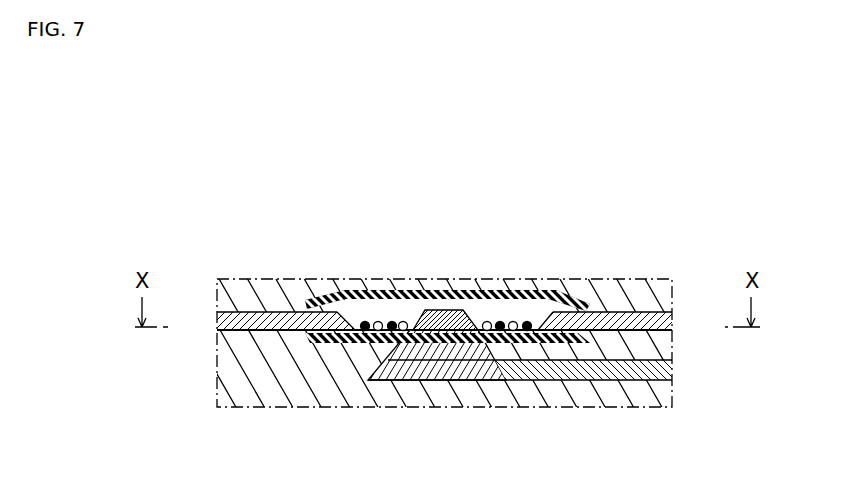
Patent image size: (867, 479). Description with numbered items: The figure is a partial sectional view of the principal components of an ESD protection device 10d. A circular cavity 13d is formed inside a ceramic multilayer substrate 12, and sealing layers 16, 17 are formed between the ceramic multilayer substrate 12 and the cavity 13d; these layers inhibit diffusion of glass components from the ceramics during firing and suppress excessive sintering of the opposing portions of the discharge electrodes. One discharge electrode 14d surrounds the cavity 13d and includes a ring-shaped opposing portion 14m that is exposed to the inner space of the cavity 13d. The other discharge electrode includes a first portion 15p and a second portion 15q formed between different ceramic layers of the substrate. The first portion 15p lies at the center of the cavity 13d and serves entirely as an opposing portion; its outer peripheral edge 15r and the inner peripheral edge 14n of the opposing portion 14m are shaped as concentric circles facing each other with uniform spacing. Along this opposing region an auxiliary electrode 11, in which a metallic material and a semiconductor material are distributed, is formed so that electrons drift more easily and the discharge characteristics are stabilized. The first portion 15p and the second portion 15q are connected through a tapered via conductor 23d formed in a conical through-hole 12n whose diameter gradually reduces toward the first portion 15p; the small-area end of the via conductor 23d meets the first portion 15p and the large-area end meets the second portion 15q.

The ESD protection device 10d is at (744, 144).
The ceramic multilayer substrate 12 is at (647, 286).
The through-hole 12n is at (488, 358).
The auxiliary electrode 11 is at (411, 325).
The cavity 13d is at (513, 313).
The discharge electrode 14d is at (228, 305).
The opposing portion 14m is at (548, 312).
The inner peripheral edge 14n is at (539, 313).
The first portion 15p is at (443, 310).
The second portion 15q is at (673, 367).
The outer peripheral edge 15r is at (397, 322).
The sealing layer 16 is at (324, 345).
The sealing layer 17 is at (487, 289).
The via conductor 23d is at (383, 345).